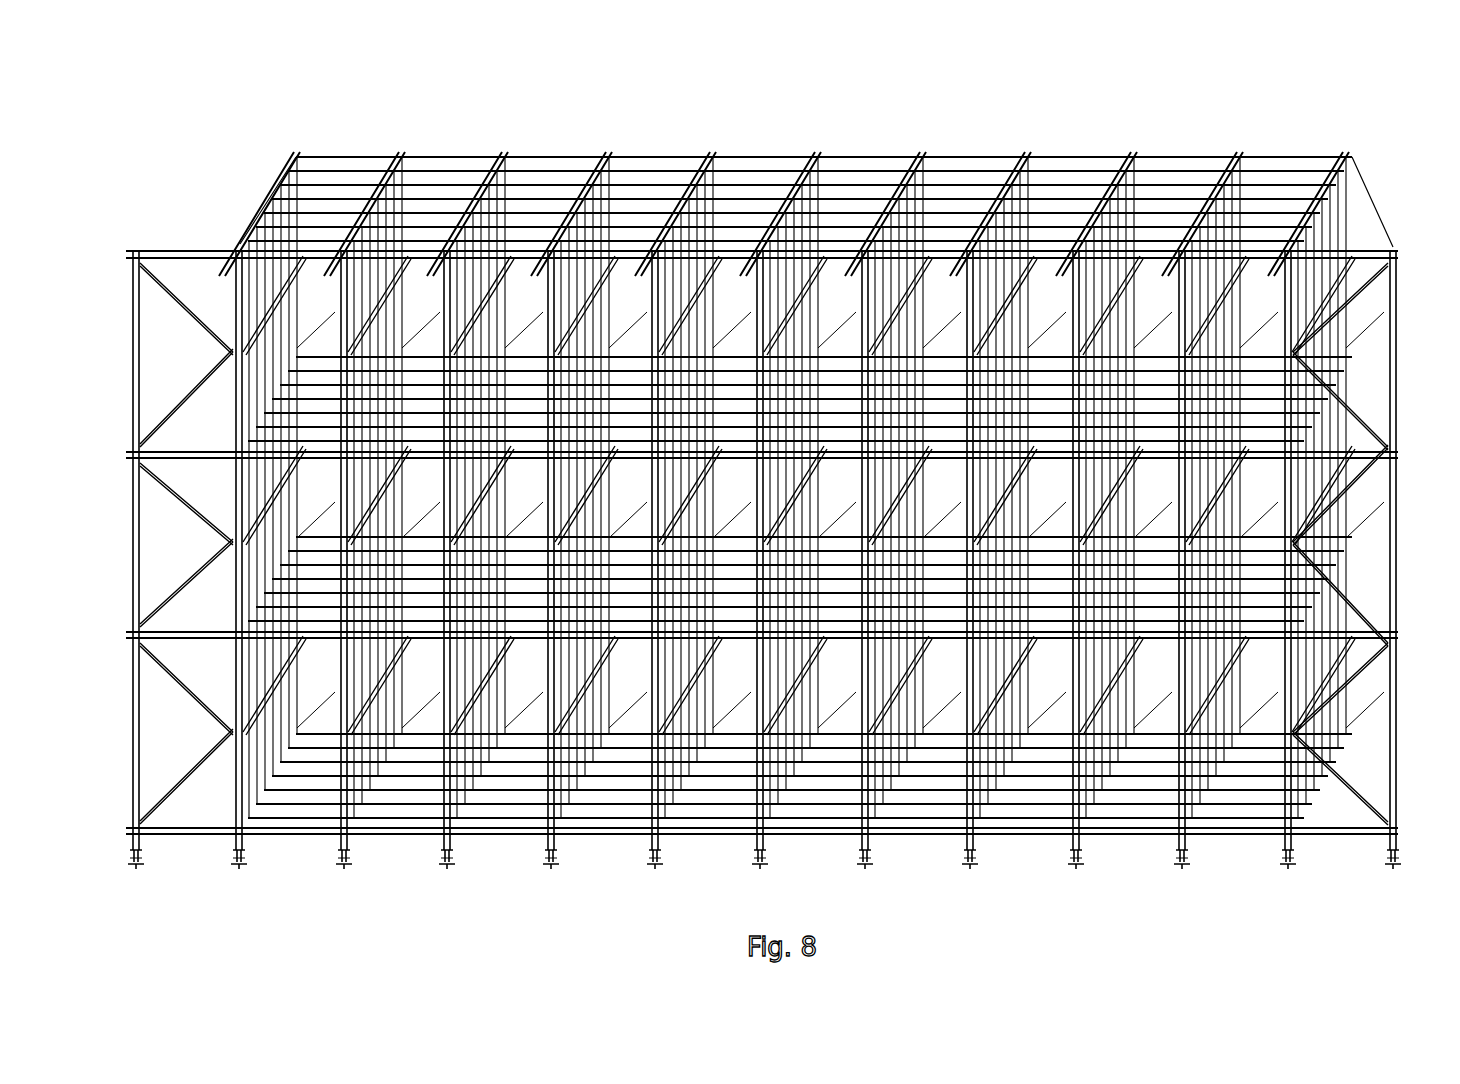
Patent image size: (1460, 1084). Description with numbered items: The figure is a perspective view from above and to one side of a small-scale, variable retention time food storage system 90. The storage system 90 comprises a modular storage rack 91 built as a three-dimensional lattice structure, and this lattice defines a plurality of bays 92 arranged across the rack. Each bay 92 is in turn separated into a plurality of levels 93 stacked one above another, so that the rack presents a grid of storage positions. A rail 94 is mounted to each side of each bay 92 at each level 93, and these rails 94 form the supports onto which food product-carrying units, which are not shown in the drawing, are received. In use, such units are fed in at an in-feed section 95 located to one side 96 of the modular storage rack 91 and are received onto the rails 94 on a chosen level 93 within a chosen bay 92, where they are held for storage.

The small-scale, variable retention time (VRT) food storage system 90 is at (214, 156).
The modular storage rack 91 is at (1062, 167).
The bay 92 is at (627, 300).
The level 93 is at (1333, 347).
The rail 94 is at (240, 712).
The in-feed section 95 is at (390, 832).
The side 96 is at (587, 830).